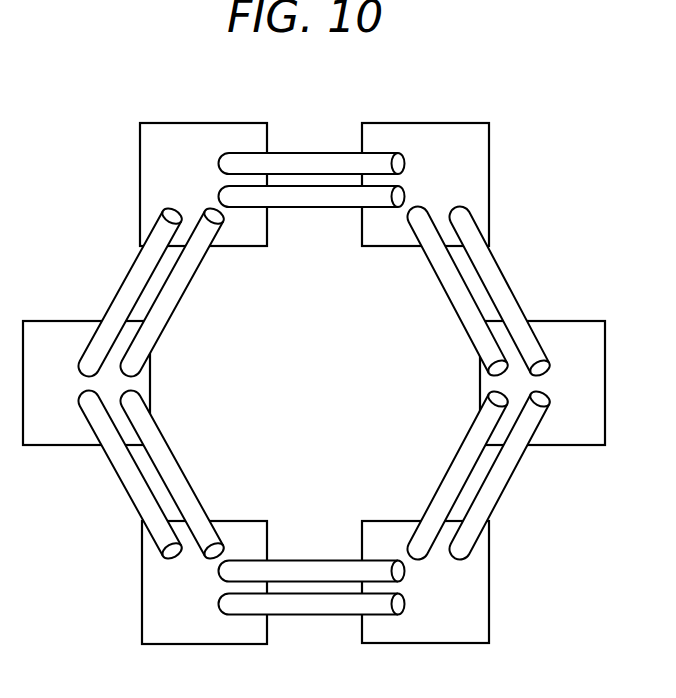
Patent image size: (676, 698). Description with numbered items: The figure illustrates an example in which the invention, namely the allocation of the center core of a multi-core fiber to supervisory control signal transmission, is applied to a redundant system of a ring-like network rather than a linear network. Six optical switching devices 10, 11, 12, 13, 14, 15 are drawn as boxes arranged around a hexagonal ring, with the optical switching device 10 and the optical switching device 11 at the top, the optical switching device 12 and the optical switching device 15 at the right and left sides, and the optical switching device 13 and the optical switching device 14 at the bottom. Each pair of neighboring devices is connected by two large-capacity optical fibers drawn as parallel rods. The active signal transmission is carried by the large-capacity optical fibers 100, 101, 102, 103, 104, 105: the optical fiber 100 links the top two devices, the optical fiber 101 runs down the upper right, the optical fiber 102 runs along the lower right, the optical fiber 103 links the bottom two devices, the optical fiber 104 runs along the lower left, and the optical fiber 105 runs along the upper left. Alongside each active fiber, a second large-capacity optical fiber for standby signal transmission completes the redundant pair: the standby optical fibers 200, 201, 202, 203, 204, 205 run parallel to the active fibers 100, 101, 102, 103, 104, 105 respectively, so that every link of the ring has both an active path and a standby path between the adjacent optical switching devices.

The optical switching device 10 is at (193, 137).
The optical switching device 11 is at (408, 133).
The optical switching device 12 is at (588, 333).
The optical switching device 13 is at (480, 615).
The optical switching device 14 is at (147, 633).
The optical switching device 15 is at (45, 337).
The large-capacity optical fiber for active signal transmission 100 is at (312, 157).
The large-capacity optical fiber for standby signal transmission 200 is at (310, 199).
The large-capacity optical fiber for active signal transmission 101 is at (497, 280).
The large-capacity optical fiber for standby signal transmission 201 is at (448, 288).
The large-capacity optical fiber for active signal transmission 102 is at (502, 477).
The large-capacity optical fiber for standby signal transmission 202 is at (450, 478).
The large-capacity optical fiber for active signal transmission 103 is at (317, 606).
The large-capacity optical fiber for standby signal transmission 203 is at (312, 567).
The large-capacity optical fiber for active signal transmission 104 is at (120, 470).
The large-capacity optical fiber for standby signal transmission 204 is at (173, 472).
The large-capacity optical fiber for active signal transmission 105 is at (127, 290).
The large-capacity optical fiber for standby signal transmission 205 is at (172, 297).